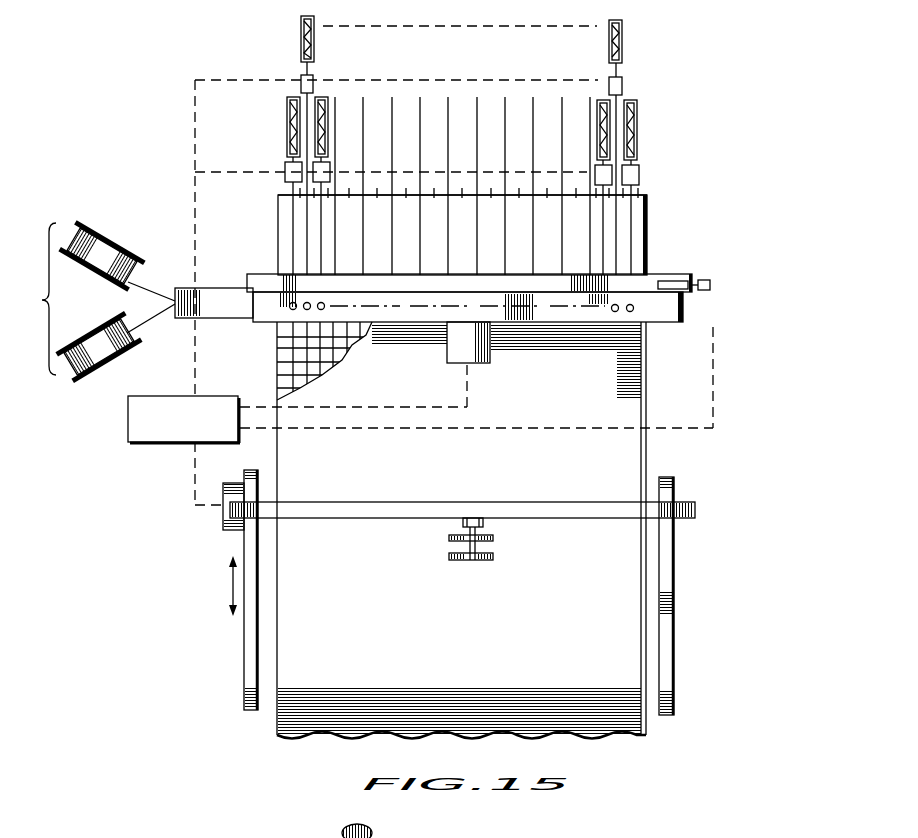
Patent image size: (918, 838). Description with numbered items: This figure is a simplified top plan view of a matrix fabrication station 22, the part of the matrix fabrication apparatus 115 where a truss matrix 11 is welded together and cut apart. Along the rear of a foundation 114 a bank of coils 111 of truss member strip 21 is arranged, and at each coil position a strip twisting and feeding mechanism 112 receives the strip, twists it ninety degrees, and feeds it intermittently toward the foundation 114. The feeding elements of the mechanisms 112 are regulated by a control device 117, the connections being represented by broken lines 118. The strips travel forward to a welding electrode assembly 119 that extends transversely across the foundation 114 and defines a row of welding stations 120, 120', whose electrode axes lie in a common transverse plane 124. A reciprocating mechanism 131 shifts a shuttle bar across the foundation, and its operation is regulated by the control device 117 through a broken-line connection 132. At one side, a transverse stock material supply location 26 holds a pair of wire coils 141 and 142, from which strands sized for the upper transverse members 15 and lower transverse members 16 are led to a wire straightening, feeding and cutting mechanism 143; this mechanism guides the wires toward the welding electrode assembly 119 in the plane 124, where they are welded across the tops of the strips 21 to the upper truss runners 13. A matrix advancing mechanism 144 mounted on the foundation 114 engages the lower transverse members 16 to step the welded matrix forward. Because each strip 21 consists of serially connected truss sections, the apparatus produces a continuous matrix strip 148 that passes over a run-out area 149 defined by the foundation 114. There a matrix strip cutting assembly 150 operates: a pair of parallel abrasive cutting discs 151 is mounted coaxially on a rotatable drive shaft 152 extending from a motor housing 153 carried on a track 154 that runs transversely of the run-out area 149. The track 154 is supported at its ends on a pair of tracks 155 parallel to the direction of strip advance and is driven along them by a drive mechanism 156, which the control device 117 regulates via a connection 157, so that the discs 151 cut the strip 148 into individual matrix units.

The matrix 11 is at (288, 355).
The upper longitudinal elements 13 is at (645, 196).
The transverse members 15 is at (150, 281).
The transverse members 16 is at (156, 323).
The truss member strip 21 is at (314, 69).
The matrix fabrication station 22 is at (762, 152).
The transverse stock material supply location 26 is at (36, 300).
The coils 111 is at (302, 36).
The strip twisting and feeding mechanism 112 is at (301, 82).
The foundation 114 is at (650, 234).
The matrix fabrication apparatus 115 is at (722, 283).
The control device 117 is at (131, 451).
The broken lines 118 is at (200, 166).
The welding electrode assembly 119 is at (678, 312).
The welding stations 120 is at (278, 323).
The guide openings 120' is at (613, 343).
The common plane 124 is at (553, 308).
The reciprocating mechanism 131 is at (668, 284).
The connection 132 is at (713, 421).
The coil 141 is at (113, 243).
The coil 142 is at (97, 362).
The wire straightening, feeding and cutting mechanism 143 is at (213, 289).
The matrix advancing mechanism 144 is at (490, 360).
The matrix strip 148 is at (292, 378).
The run-out area 149 is at (530, 648).
The matrix strip cutting assembly 150 is at (509, 571).
The abrasive cutting discs 151 is at (493, 557).
The rotatable drive shaft 152 is at (449, 547).
The motor housing 153 is at (483, 522).
The track 154 is at (470, 503).
The tracks 155 is at (248, 660).
The drive mechanism 156 is at (225, 518).
The connection 157 is at (186, 485).